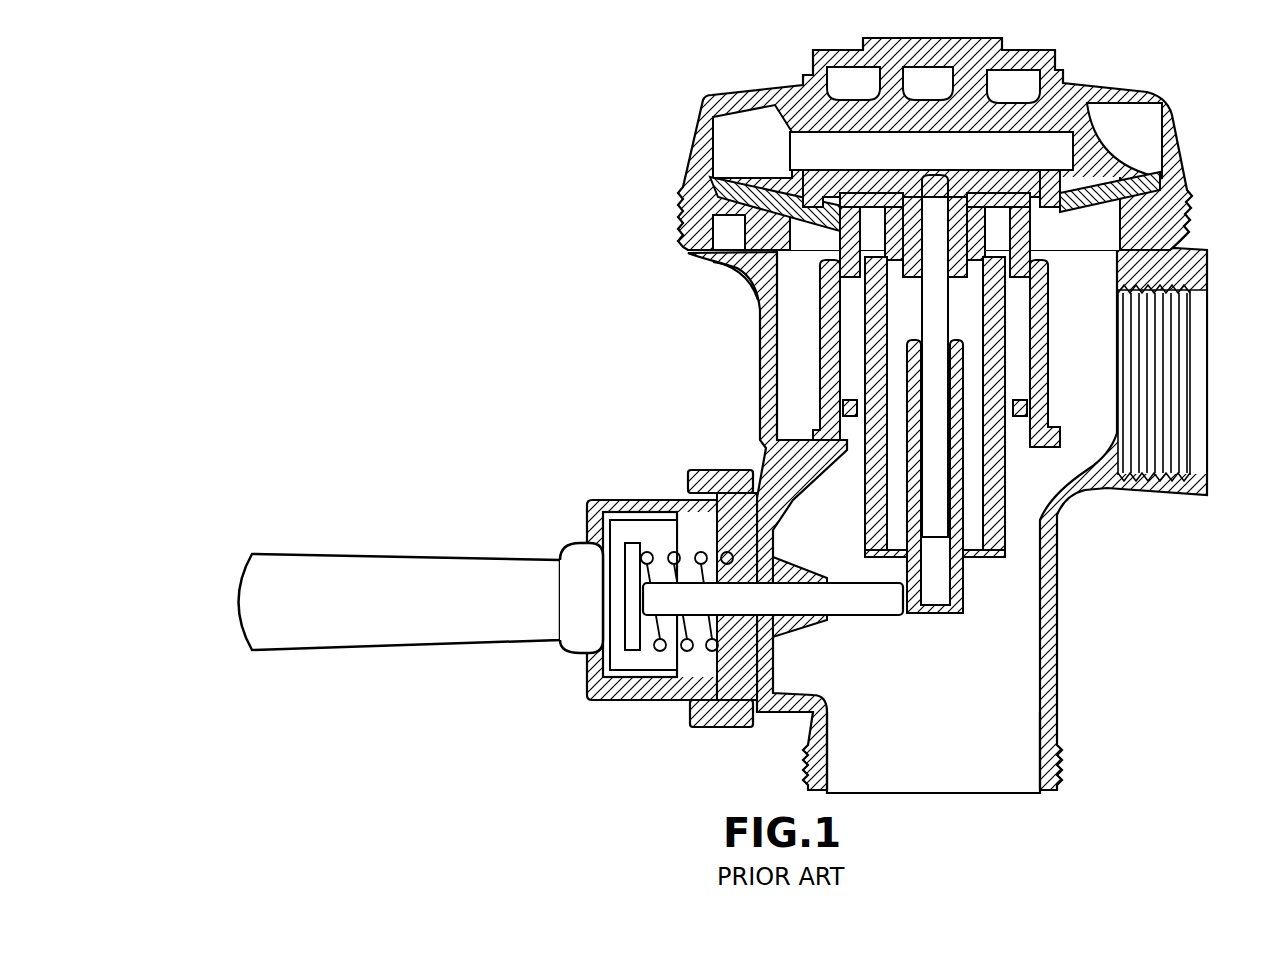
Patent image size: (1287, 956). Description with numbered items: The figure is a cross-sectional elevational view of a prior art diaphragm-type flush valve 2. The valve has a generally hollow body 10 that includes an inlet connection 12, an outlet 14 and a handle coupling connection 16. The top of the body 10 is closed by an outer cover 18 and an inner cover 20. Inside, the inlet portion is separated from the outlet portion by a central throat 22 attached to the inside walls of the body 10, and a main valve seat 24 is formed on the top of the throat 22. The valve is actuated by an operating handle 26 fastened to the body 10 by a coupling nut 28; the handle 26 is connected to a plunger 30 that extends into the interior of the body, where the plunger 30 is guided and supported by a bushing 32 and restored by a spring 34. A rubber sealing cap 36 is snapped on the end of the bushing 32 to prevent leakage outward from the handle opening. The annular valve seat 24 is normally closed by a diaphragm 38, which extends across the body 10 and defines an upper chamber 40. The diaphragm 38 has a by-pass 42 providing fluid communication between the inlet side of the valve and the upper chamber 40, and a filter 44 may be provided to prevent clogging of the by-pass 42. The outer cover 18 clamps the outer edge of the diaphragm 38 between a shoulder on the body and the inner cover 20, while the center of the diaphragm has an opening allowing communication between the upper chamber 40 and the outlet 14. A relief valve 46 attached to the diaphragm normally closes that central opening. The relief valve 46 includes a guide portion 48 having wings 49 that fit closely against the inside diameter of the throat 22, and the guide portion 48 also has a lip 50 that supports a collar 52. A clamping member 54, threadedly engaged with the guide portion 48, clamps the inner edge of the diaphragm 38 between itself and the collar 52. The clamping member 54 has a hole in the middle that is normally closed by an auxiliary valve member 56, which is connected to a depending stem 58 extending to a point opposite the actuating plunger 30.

The flush valve 2 is at (628, 158).
The valve body 10 is at (1062, 675).
The inlet connection 12 is at (1190, 400).
The outlet 14 is at (997, 773).
The handle coupling connection 16 is at (753, 676).
The outer cover 18 is at (1113, 90).
The inner cover 20 is at (1160, 122).
The central throat 22 is at (830, 373).
The main valve seat 24 is at (1025, 268).
The operating handle 26 is at (363, 555).
The coupling nut 28 is at (720, 723).
The plunger 30 is at (878, 603).
The bushing 32 is at (672, 668).
The spring 34 is at (667, 550).
The rubber sealing cap 36 is at (817, 627).
The diaphragm 38 is at (1070, 212).
The upper chamber 40 is at (823, 153).
The by-pass 42 is at (785, 217).
The filter 44 is at (753, 273).
The relief valve 46 is at (867, 517).
The guide portion 48 is at (1003, 387).
The wings 49 is at (857, 453).
The lip 50 is at (1010, 285).
The collar 52 is at (840, 262).
The clamping member 54 is at (1043, 168).
The auxiliary valve member 56 is at (890, 176).
The depending stem 58 is at (962, 605).